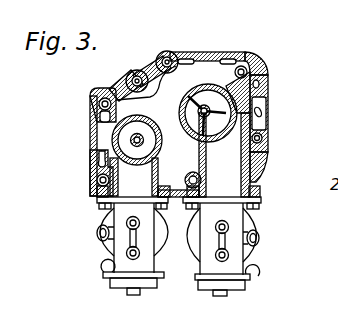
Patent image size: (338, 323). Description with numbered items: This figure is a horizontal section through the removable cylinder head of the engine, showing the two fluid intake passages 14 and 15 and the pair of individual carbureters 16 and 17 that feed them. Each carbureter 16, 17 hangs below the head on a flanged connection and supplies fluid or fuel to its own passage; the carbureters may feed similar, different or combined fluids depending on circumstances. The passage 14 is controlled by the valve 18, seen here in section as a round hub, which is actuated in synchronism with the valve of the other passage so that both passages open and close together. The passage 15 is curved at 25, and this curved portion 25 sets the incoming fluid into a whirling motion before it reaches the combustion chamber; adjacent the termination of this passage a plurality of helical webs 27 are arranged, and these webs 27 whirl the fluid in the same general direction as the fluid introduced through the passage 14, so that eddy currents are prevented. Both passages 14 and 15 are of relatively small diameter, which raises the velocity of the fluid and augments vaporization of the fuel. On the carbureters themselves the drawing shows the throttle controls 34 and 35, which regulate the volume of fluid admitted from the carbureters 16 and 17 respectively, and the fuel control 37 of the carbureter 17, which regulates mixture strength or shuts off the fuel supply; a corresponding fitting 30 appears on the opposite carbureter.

The fluid intake passage 14 is at (127, 182).
The fluid intake passage 15 is at (230, 192).
The carbureter 16 is at (125, 268).
The carbureter 17 is at (232, 267).
The valve 18 is at (128, 134).
The curved portion of passage 25 is at (267, 80).
The helical webs 27 is at (200, 103).
The left fitting 30 is at (95, 235).
The throttle control 34 is at (137, 241).
The throttle control 35 is at (227, 234).
The fuel control 37 is at (262, 238).